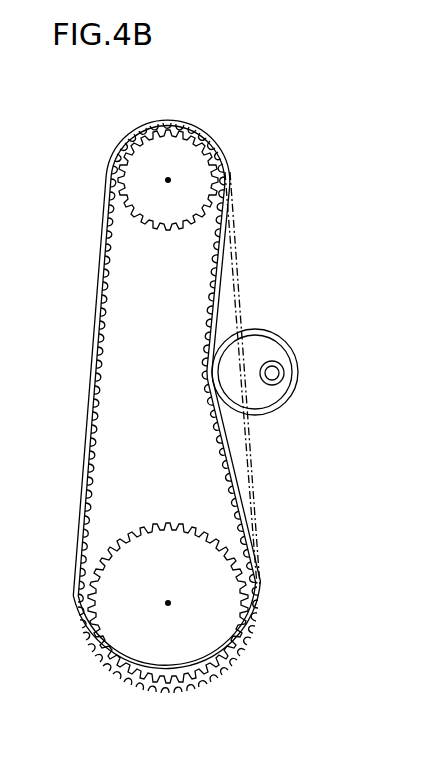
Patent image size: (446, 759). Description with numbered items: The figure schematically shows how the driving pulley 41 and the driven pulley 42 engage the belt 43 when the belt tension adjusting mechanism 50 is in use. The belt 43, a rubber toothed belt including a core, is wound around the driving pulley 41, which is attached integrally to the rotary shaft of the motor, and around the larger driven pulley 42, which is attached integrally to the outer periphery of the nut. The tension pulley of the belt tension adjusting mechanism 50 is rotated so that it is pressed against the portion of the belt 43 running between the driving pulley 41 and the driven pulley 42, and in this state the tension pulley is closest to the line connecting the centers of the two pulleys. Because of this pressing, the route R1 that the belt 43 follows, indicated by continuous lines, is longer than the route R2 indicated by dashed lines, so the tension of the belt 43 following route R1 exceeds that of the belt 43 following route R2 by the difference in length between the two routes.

The driving pulley 41 is at (198, 152).
The driven pulley 42 is at (168, 529).
The belt 43 is at (86, 451).
The belt tension adjusting mechanism 50 is at (318, 350).
The route R1 is at (229, 270).
The route R2 is at (240, 303).